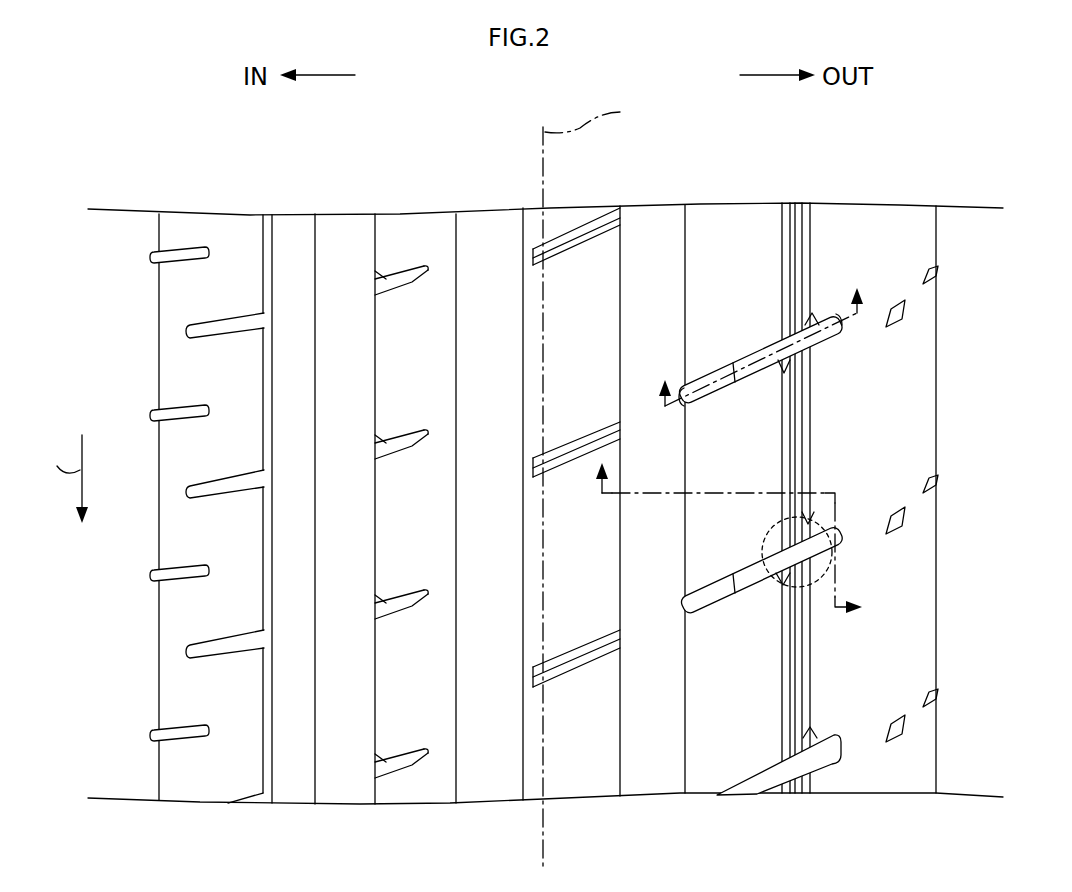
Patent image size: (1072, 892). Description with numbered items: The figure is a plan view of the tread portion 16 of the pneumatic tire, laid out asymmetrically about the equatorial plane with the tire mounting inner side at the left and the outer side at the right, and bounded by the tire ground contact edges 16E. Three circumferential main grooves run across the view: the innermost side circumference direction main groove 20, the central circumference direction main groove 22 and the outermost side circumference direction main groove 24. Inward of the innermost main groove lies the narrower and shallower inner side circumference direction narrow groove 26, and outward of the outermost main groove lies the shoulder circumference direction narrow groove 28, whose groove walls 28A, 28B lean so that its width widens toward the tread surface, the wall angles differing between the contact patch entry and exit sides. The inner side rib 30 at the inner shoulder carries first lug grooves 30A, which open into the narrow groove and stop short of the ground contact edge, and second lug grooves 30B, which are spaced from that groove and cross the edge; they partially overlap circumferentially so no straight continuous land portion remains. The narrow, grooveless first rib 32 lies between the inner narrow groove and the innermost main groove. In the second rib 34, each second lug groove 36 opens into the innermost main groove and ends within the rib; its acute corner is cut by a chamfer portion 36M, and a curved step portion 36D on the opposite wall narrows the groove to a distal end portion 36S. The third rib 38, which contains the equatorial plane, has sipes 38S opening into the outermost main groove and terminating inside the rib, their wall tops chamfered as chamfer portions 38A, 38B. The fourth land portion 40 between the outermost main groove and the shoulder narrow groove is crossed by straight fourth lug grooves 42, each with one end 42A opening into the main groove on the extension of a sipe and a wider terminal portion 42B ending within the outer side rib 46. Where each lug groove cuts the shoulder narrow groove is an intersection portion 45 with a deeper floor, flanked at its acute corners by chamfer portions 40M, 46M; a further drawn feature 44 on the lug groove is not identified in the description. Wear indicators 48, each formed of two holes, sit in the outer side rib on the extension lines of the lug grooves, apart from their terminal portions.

The tread portion 16 is at (1034, 144).
The tire ground contact edge 16E is at (159, 228).
The innermost side circumference direction main groove 20 is at (344, 218).
The central circumference direction main groove 22 is at (486, 218).
The outermost side circumference direction main groove 24 is at (654, 210).
The inner side circumference direction narrow groove 26 is at (268, 218).
The shoulder circumference direction narrow groove 28 is at (805, 450).
The groove wall 28A is at (787, 207).
The groove wall 28B is at (806, 207).
The inner side rib 30 is at (182, 218).
The first lug groove 30A is at (225, 320).
The second lug groove 30B is at (198, 408).
The first rib 32 is at (300, 218).
The second rib 34 is at (410, 218).
The second lug groove 36 is at (388, 503).
The chamfer portion 36M is at (380, 275).
The distal end portion 36S is at (421, 274).
The curved step portion 36D is at (400, 292).
The third rib 38 is at (605, 473).
The chamfer portion 38A is at (600, 225).
The chamfer portion 38B is at (590, 236).
The sipe 38S is at (570, 258).
The fourth land portion 40 is at (727, 207).
The chamfer portion 40M is at (772, 372).
The fourth lug groove 42 is at (797, 520).
The one end 42A is at (683, 408).
The terminal portion 42B is at (845, 343).
The raised bottom portion 44 is at (712, 378).
The intersection portion 45 is at (762, 551).
The outer side rib 46 is at (860, 207).
The chamfer portion 46M is at (820, 312).
The wear indicator 48 is at (897, 300).